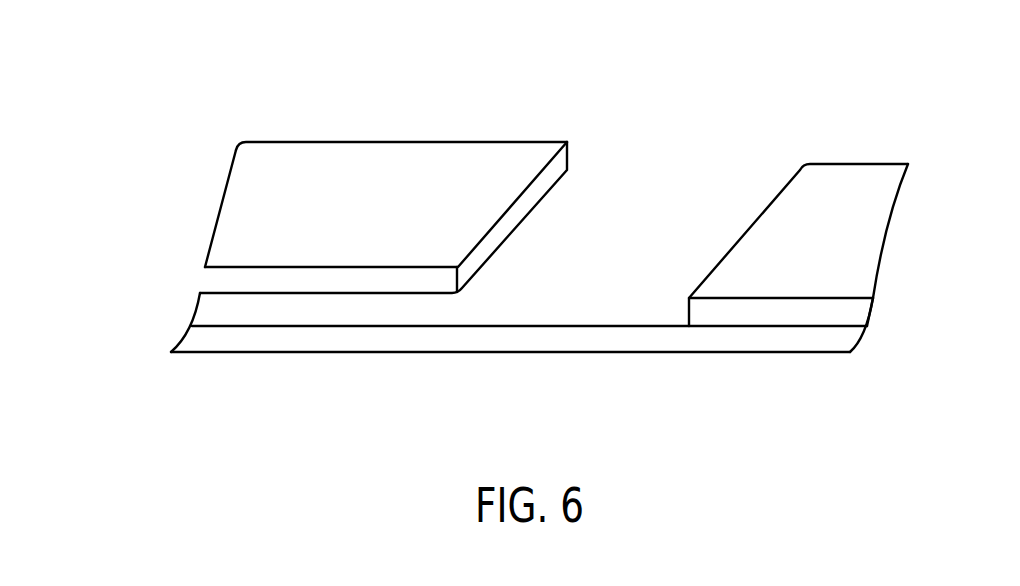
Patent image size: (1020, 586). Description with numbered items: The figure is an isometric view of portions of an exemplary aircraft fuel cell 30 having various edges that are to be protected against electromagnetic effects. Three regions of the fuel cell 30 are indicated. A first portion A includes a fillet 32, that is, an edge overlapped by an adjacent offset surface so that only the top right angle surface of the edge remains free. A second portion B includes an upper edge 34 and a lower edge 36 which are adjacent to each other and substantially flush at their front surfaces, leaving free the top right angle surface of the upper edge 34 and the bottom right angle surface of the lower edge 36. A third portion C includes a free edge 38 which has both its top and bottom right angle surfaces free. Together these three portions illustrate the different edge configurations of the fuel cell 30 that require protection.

The aircraft fuel cell 30 is at (491, 212).
The fillet 32 is at (340, 282).
The upper edge 34 is at (790, 313).
The lower edge 36 is at (780, 337).
The free edge 38 is at (563, 337).
The first portion A is at (308, 320).
The second portion B is at (828, 377).
The third portion C is at (530, 371).